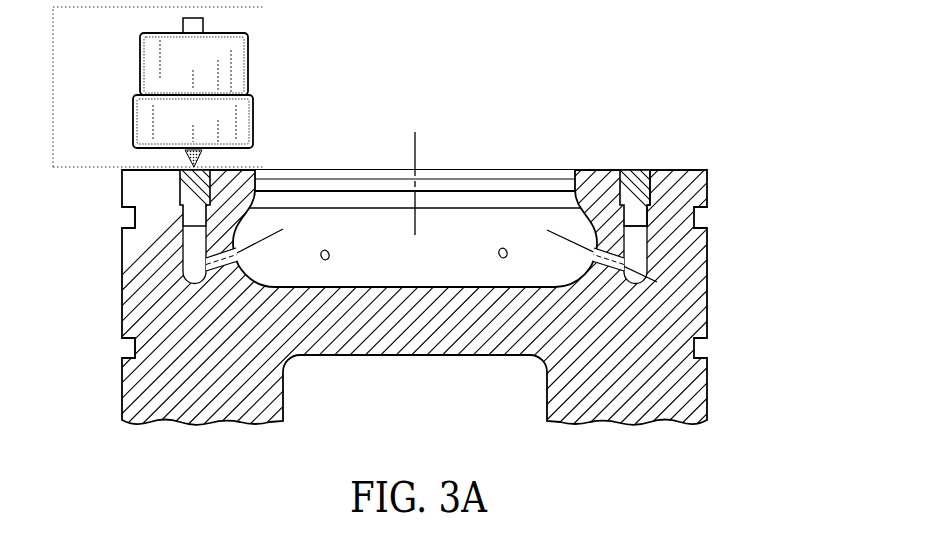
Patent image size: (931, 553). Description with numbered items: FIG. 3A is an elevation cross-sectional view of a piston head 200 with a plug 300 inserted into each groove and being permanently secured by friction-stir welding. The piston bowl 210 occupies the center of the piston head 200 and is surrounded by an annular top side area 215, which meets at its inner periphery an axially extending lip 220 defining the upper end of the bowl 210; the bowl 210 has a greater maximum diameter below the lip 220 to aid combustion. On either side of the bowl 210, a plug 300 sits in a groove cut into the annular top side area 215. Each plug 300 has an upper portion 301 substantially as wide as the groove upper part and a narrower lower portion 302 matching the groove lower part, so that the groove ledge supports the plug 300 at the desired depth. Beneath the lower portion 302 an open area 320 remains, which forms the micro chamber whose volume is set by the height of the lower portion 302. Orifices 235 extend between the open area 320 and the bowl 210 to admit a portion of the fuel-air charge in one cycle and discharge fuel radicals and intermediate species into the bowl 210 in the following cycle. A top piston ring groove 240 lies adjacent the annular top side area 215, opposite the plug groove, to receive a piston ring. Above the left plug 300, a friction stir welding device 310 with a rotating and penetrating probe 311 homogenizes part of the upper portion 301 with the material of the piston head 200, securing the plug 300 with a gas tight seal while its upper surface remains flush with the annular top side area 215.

The piston head 200 is at (713, 296).
The piston bowl 210 is at (470, 225).
The annular top side area 215 is at (676, 170).
The axially extending lip 220 is at (323, 185).
The orifices 235 is at (242, 257).
The top piston ring groove 240 is at (115, 222).
The plug 300 is at (628, 168).
The upper portion 301 is at (653, 183).
The lower portion 302 is at (648, 218).
The friction stir welding device 310 is at (128, 77).
The rotating and penetrating probe 311 is at (178, 159).
The open area 320 is at (200, 261).